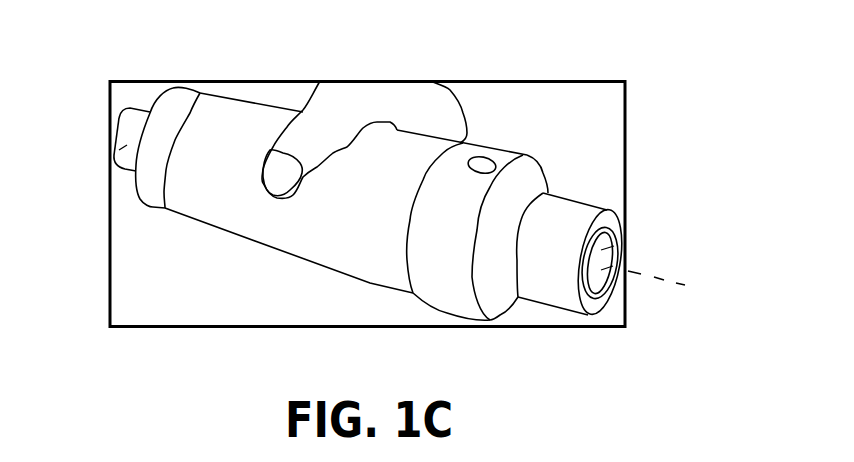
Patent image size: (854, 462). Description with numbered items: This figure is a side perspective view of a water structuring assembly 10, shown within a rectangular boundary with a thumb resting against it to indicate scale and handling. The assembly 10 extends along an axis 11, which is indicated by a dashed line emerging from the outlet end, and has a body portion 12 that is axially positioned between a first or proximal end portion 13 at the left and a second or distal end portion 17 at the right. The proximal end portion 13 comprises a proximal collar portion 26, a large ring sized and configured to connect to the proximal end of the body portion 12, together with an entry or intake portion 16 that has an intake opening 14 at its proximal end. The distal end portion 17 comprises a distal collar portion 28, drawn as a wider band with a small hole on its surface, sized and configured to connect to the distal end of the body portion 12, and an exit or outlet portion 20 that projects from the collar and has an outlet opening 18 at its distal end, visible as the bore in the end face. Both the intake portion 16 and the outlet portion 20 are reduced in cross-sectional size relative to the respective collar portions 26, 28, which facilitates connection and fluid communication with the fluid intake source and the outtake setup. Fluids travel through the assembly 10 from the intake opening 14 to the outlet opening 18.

The water structuring assembly 10 is at (425, 100).
The axis 11 is at (653, 280).
The body portion 12 is at (223, 217).
The proximal end portion 13 is at (192, 66).
The intake opening 14 is at (120, 127).
The intake portion 16 is at (123, 147).
The distal end portion 17 is at (537, 351).
The outlet opening 18 is at (607, 247).
The outlet portion 20 is at (565, 213).
The proximal collar portion 26 is at (152, 198).
The distal collar portion 28 is at (437, 288).